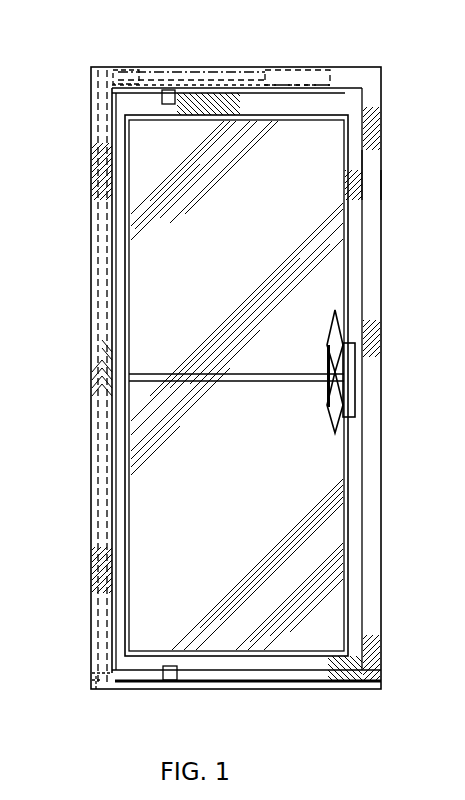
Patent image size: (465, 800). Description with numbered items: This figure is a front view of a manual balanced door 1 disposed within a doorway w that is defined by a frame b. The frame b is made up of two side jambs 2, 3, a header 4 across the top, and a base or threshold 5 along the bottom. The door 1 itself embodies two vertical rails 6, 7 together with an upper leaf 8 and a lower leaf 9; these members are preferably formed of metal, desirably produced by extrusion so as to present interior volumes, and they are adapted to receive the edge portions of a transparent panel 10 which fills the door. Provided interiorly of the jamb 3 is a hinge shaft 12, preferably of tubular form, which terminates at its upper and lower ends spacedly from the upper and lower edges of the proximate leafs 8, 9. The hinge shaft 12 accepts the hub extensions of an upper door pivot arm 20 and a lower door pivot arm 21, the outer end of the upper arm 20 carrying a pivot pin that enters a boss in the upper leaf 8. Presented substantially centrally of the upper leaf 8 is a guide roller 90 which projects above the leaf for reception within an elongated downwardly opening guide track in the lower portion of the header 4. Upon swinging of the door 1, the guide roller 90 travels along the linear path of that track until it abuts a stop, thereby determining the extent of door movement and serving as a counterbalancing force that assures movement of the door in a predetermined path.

The door 1 is at (320, 262).
The side jamb 2 is at (381, 270).
The side jamb 3 is at (91, 271).
The header 4 is at (200, 55).
The base or threshold 5 is at (152, 690).
The vertical rail 6 is at (355, 305).
The vertical rail 7 is at (117, 297).
The upper leaf 8 is at (253, 100).
The lower leaf 9 is at (232, 672).
The transparent panel 10 is at (143, 323).
The hinge shaft 12 is at (102, 417).
The upper door pivot arm 20 is at (148, 95).
The lower door pivot arm 21 is at (128, 676).
The guide roller 90 is at (233, 93).
The doorway w is at (360, 162).
The frame b is at (381, 185).